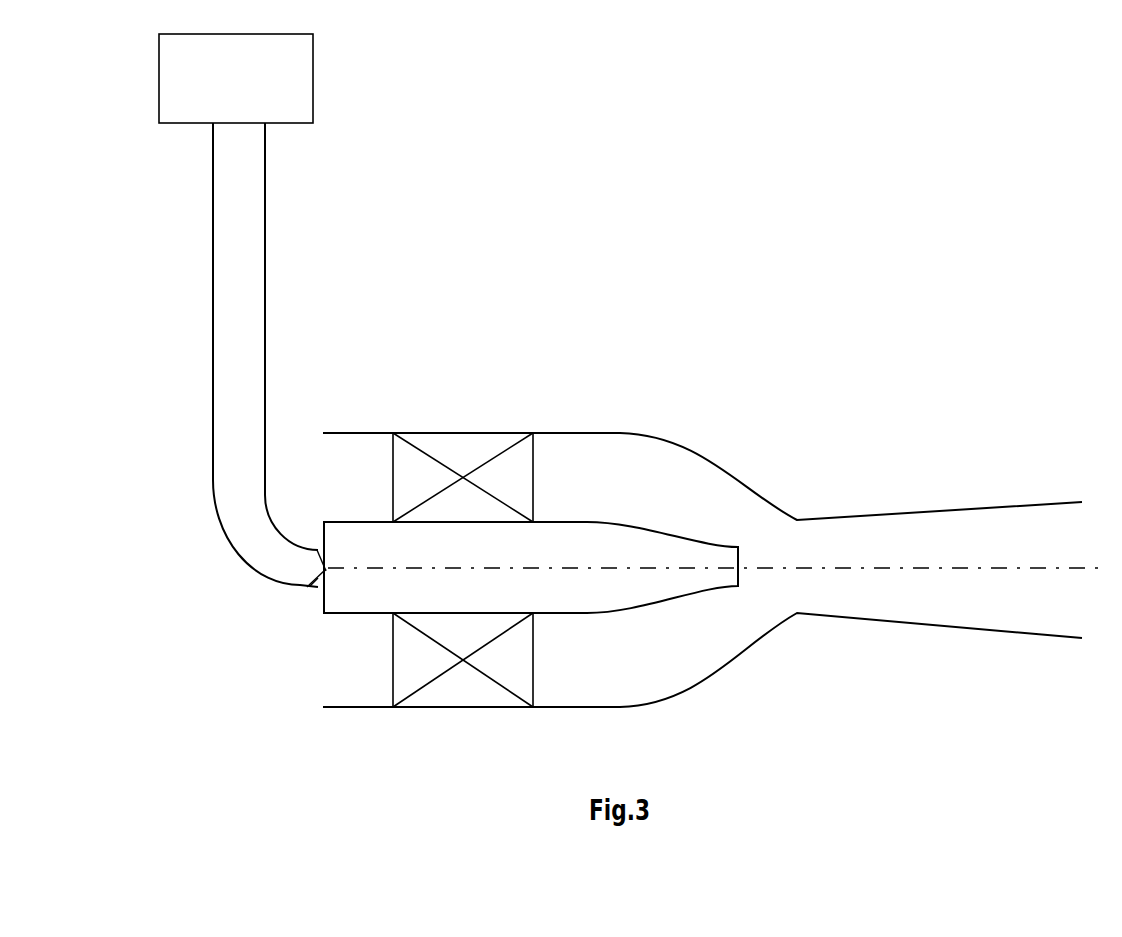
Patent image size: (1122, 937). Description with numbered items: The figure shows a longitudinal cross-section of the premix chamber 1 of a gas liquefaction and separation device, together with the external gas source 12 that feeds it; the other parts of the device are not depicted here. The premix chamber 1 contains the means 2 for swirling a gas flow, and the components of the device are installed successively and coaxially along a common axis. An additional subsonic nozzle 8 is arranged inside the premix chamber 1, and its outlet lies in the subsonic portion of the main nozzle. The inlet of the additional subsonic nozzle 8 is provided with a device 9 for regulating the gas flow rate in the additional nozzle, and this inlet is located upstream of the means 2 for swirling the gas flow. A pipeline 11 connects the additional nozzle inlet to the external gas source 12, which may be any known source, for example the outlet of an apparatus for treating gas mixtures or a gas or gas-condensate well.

The premix chamber 1 is at (352, 463).
The means for swirling a gas flow 2 is at (453, 470).
The additional subsonic nozzle 8 is at (567, 552).
The device for regulating gas flow rate 9 is at (318, 569).
The pipeline 11 is at (226, 198).
The external gas source 12 is at (276, 77).